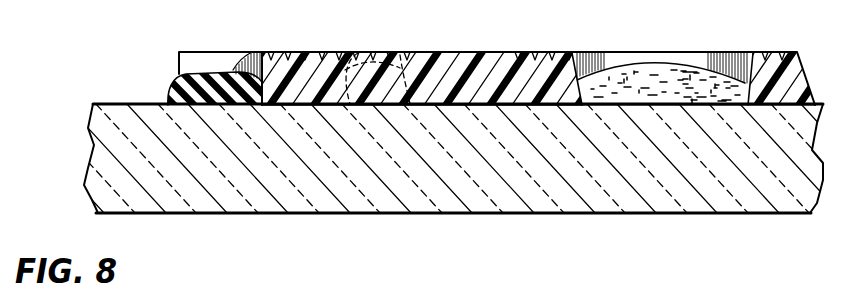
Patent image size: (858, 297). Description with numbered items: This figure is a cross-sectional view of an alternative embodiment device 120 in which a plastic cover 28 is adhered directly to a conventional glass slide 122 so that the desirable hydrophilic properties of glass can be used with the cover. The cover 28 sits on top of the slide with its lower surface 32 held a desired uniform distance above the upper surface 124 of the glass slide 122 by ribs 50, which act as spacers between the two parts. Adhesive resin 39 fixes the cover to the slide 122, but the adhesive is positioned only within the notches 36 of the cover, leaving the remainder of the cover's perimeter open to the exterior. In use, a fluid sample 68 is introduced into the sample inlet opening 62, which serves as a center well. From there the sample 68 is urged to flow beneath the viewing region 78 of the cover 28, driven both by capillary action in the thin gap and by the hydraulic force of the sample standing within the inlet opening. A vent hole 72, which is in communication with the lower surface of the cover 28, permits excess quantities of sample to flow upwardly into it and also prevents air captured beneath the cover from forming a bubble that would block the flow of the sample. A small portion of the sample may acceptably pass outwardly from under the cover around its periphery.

The device 120 is at (426, 59).
The upper surface 124 is at (108, 98).
The glass slide 122 is at (174, 214).
The adhesive resin 39 is at (200, 72).
The cover 28 is at (222, 51).
The notches 36 is at (251, 64).
The vent hole 72 is at (362, 52).
The viewing region 78 is at (439, 52).
The sample inlet opening 62 is at (578, 66).
The fluid sample 68 is at (717, 72).
The ribs 50 is at (408, 105).
The lower surface 32 is at (486, 106).